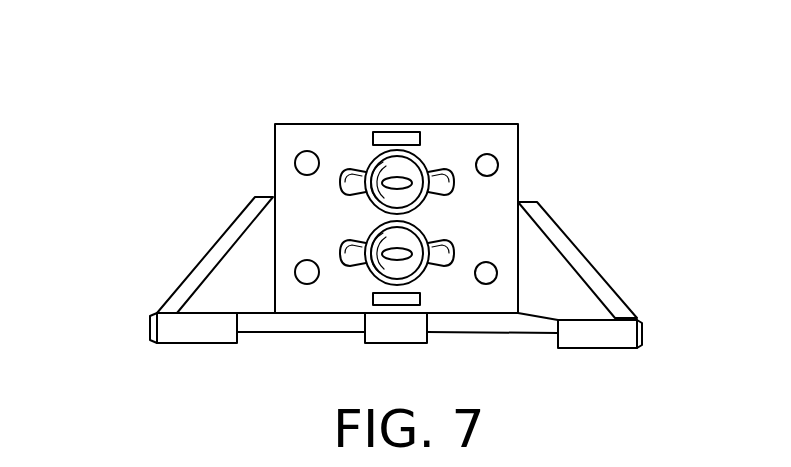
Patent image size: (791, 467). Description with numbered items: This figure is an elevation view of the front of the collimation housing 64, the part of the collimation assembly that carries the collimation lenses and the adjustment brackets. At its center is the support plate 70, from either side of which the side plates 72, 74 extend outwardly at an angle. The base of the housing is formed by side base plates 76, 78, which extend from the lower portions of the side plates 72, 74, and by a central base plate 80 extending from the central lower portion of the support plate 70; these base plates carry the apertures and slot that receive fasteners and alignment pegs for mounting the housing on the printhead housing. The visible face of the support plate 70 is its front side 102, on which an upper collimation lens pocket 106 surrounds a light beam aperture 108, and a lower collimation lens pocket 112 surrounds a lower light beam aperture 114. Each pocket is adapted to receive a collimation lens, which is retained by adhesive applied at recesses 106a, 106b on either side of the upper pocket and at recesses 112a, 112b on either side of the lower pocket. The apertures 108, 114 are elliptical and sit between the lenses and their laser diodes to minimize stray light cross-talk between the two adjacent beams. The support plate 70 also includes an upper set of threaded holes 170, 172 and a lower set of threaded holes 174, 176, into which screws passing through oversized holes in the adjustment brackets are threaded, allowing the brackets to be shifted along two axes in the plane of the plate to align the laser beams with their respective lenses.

The collimation housing 64 is at (283, 100).
The support plate 70 is at (340, 123).
The side plate 72 is at (575, 298).
The side plate 74 is at (205, 297).
The side base plate 76 is at (625, 332).
The side base plate 78 is at (165, 345).
The central base plate 80 is at (413, 343).
The front side 102 is at (445, 145).
The upper collimation lens pocket 106 is at (392, 168).
The recess 106a is at (340, 183).
The recess 106b is at (455, 185).
The light beam aperture 108 is at (399, 176).
The lower collimation lens pocket 112 is at (418, 268).
The recess 112a is at (340, 253).
The recess 112b is at (455, 253).
The lower light beam aperture 114 is at (385, 258).
The threaded hole 170 is at (295, 163).
The threaded hole 172 is at (488, 154).
The threaded hole 174 is at (295, 272).
The threaded hole 176 is at (497, 273).